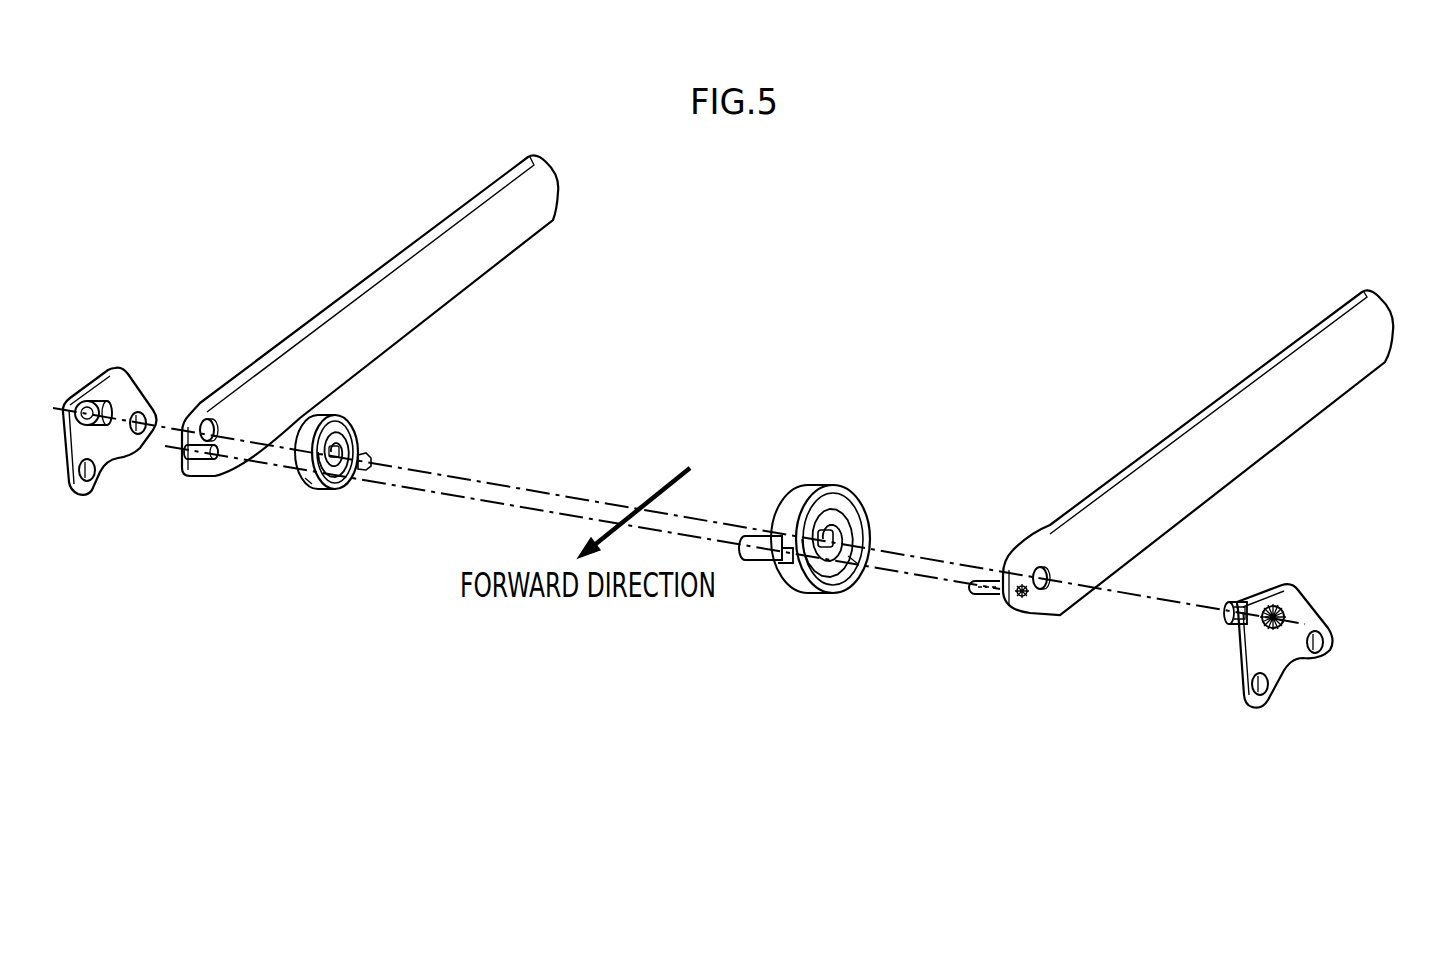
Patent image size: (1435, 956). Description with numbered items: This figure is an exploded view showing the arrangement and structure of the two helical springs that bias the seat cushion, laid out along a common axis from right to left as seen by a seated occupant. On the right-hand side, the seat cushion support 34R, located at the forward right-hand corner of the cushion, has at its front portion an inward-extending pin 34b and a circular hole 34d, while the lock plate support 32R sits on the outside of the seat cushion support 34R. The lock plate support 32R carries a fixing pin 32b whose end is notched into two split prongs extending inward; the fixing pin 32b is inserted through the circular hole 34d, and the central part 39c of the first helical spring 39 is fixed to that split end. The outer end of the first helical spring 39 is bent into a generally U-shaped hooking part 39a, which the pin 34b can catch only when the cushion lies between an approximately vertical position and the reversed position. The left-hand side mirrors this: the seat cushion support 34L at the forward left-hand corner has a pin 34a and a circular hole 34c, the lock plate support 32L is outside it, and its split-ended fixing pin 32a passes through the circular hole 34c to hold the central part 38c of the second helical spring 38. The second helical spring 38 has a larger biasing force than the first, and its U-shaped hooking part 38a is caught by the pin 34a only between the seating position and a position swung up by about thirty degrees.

The lock plate support 32R is at (120, 392).
The fixing pin 32b is at (102, 428).
The seat cushion support 34R is at (415, 278).
The circular hole 34d is at (205, 436).
The pin 34b is at (190, 452).
The first helical spring 39 is at (343, 417).
The central part 39c is at (312, 484).
The hooking part 39a is at (367, 466).
The second helical spring 38 is at (810, 479).
The hooking part 38a is at (778, 534).
The central part 38c is at (856, 562).
The seat cushion support 34L is at (1208, 440).
The circular hole 34c is at (1032, 562).
The pin 34a is at (986, 594).
The lock plate support 32L is at (1283, 598).
The fixing pin 32a is at (1228, 612).